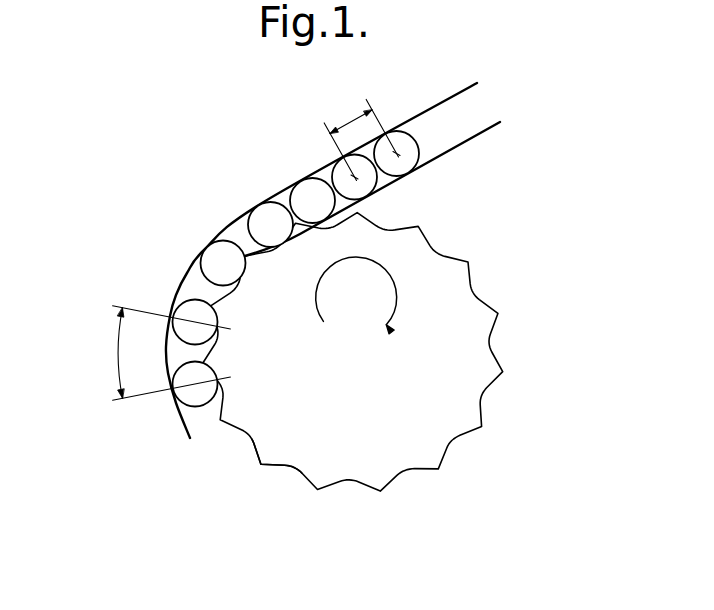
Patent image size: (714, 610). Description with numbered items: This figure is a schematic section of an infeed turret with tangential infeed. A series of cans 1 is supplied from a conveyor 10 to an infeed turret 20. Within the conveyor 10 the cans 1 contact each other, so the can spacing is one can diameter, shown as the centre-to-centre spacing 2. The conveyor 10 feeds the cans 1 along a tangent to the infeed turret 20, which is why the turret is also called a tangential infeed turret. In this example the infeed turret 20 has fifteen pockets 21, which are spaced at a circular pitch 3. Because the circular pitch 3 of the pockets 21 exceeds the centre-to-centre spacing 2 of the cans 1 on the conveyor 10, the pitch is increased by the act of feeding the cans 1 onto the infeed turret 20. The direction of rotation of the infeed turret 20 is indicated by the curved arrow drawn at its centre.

The can 1 is at (409, 163).
The centre-to-centre spacing 2 is at (348, 123).
The circular pitch 3 is at (120, 335).
The conveyor 10 is at (473, 139).
The infeed turret 20 is at (457, 348).
The pocket 21 is at (337, 481).